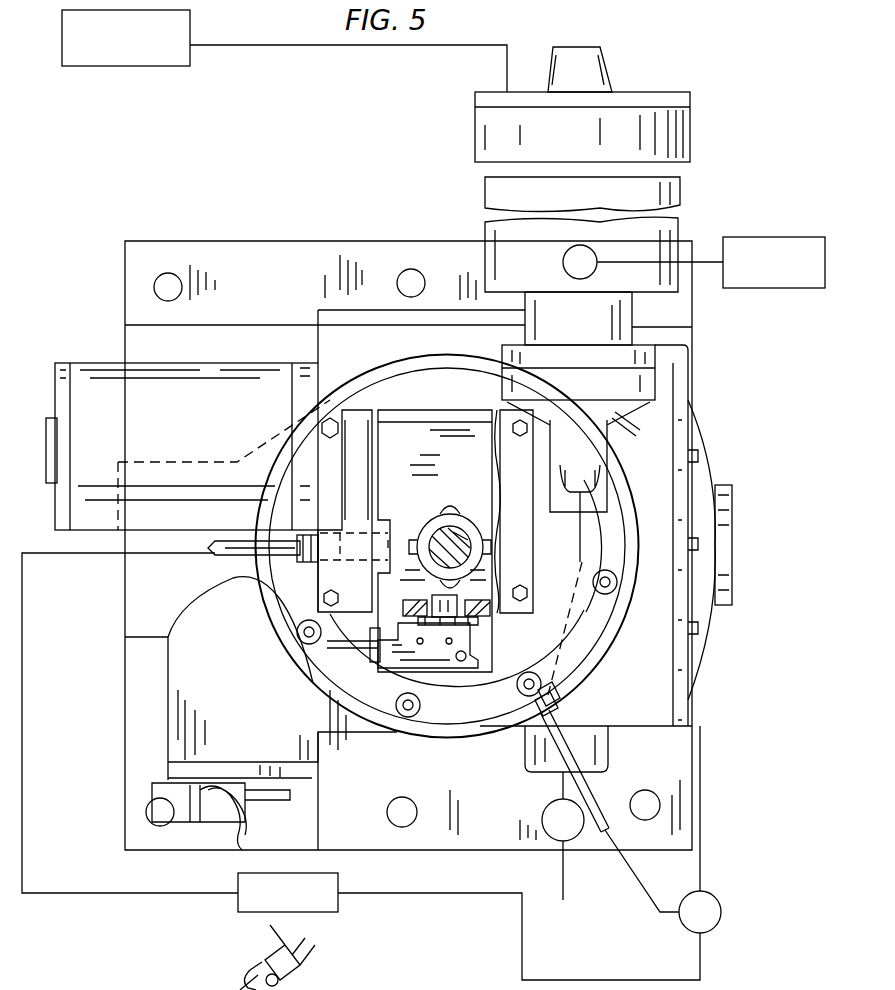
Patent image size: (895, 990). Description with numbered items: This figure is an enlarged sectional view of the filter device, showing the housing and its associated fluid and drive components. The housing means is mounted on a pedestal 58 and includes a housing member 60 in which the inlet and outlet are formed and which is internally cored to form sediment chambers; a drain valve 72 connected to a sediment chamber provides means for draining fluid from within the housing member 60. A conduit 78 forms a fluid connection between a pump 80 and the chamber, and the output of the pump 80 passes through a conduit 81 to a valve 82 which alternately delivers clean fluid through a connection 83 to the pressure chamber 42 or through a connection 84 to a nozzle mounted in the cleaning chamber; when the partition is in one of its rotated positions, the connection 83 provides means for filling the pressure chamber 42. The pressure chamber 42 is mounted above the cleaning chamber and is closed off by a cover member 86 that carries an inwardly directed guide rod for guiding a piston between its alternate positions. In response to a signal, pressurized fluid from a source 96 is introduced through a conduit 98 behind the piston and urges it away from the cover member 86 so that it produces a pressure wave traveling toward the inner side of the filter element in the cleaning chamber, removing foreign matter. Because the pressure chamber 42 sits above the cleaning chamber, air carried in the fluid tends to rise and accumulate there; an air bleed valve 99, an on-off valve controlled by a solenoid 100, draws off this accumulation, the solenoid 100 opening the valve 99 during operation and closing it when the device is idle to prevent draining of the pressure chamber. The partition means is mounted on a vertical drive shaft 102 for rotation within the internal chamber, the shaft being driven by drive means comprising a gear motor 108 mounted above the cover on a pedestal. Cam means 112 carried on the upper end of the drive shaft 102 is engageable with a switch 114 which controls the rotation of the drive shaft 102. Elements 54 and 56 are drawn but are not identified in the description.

The pressure chamber 42 is at (606, 223).
The flange 54 is at (690, 360).
The adjusting knob 56 is at (735, 497).
The pedestal 58 is at (462, 850).
The housing member 60 is at (640, 727).
The drain valve 72 is at (542, 818).
The conduit 78 is at (200, 896).
The pump 80 is at (338, 885).
The conduit 81 is at (450, 895).
The valve 82 is at (721, 915).
The connection 83 is at (702, 822).
The connection 84 is at (590, 805).
The cover member 86 is at (693, 100).
The source 96 is at (148, 68).
The conduit 98 is at (312, 48).
The air bleed valve 99 is at (597, 255).
The solenoid 100 is at (770, 237).
The drive shaft 102 is at (455, 528).
The gear motor 108 is at (103, 368).
The cam means 112 is at (426, 526).
The switch 114 is at (470, 660).